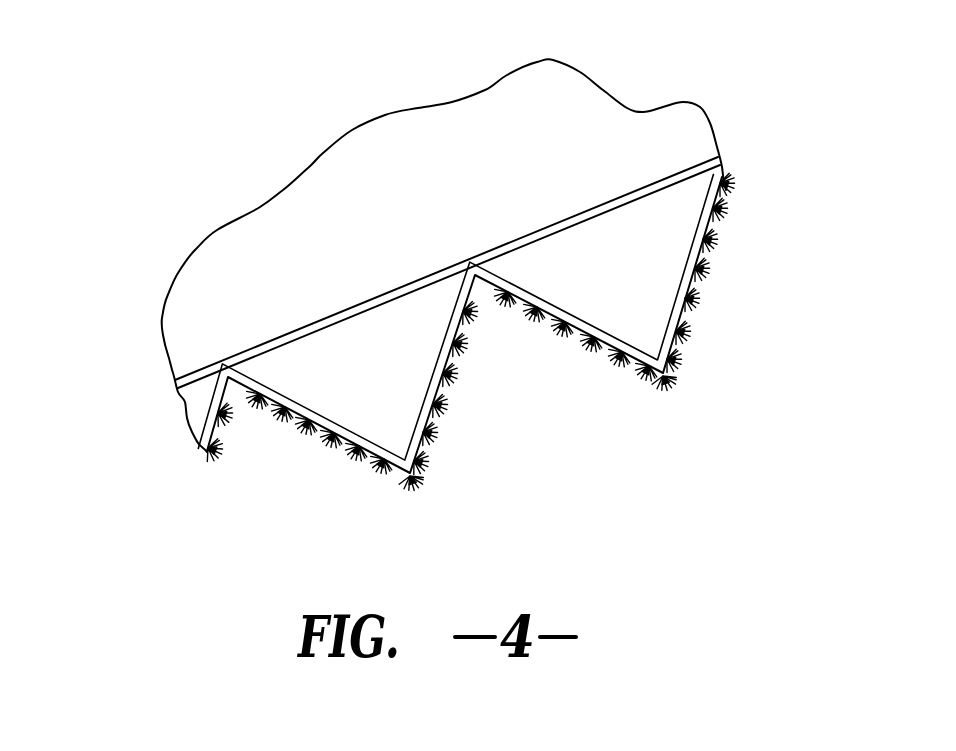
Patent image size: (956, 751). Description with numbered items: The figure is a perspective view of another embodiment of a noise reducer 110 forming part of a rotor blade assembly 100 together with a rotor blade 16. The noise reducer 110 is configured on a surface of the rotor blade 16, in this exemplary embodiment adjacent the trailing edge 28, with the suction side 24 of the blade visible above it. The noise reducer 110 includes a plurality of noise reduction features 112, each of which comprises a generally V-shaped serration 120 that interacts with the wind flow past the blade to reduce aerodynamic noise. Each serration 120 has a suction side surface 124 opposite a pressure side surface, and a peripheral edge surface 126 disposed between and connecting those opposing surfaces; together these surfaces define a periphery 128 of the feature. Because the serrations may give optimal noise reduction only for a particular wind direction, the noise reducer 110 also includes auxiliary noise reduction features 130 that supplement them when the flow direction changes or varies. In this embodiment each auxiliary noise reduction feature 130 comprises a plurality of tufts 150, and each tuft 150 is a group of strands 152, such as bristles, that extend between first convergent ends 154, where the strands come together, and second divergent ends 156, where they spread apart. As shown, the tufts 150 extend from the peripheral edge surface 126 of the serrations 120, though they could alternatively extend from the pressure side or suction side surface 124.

The rotor blade assembly 100 is at (180, 167).
The rotor blade 16 is at (305, 134).
The suction side 24 is at (585, 100).
The trailing edge 28 is at (698, 168).
The noise reducer 110 is at (178, 440).
The noise reduction features 112 is at (307, 377).
The serration 120 is at (357, 407).
The suction side surface 124 is at (685, 205).
The peripheral edge surface 126 is at (717, 250).
The periphery 128 is at (708, 293).
The auxiliary noise reduction features 130 is at (454, 453).
The tuft 150 is at (462, 422).
The strands 152 is at (465, 347).
The first convergent ends 154 is at (415, 490).
The second divergent ends 156 is at (385, 495).